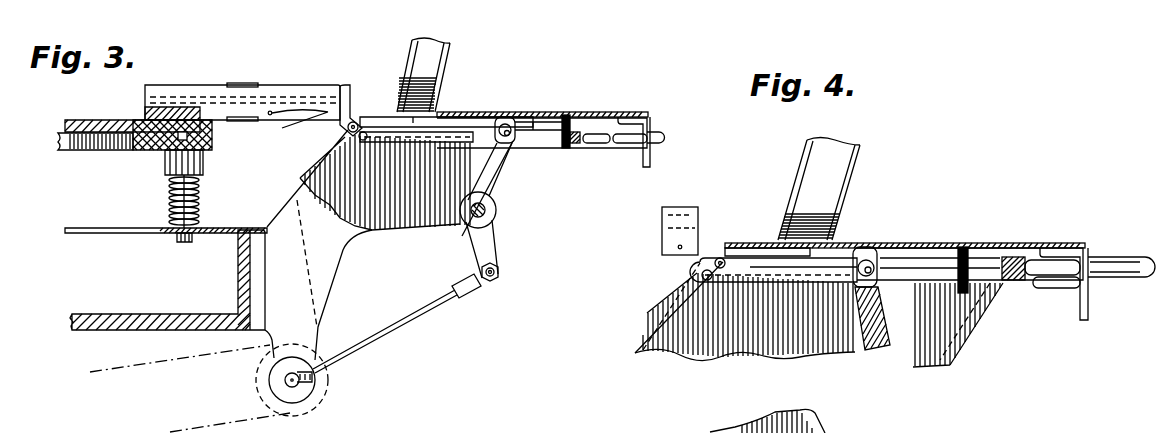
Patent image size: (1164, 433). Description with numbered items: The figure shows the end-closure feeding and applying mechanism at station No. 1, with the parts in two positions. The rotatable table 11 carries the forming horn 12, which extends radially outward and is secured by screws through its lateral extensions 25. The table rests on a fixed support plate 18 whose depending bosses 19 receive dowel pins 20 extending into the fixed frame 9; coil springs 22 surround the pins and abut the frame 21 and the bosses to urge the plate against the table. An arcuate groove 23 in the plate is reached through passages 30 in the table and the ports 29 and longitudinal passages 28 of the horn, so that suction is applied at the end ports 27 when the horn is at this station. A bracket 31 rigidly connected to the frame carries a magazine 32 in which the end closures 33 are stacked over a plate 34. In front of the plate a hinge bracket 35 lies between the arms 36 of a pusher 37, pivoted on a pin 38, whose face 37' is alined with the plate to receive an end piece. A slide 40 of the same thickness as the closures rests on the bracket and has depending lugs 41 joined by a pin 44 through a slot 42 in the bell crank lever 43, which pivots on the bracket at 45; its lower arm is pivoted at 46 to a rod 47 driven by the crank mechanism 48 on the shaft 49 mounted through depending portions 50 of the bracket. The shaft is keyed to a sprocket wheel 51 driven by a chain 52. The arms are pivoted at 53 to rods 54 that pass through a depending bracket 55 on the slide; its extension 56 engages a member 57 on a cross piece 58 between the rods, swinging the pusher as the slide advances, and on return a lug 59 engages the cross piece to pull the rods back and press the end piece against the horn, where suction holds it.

In FIG. 3, the station No. 1 is at (293, 52).
In FIG. 3, the fixed frame 9 is at (238, 286).
In FIG. 3, the table 11 is at (70, 120).
In FIG. 3, the forming horn 12 is at (200, 85).
In FIG. 4, the forming horn 12 is at (690, 207).
In FIG. 3, the support plate 18 is at (212, 138).
In FIG. 3, the depending bosses 19 is at (203, 162).
In FIG. 3, the dowel pins 20 is at (178, 240).
In FIG. 3, the frame 21 is at (222, 228).
In FIG. 3, the coil springs 22 is at (200, 195).
In FIG. 3, the arcuate groove 23 is at (170, 152).
In FIG. 3, the lateral extensions 25 is at (163, 108).
In FIG. 3, the ports 27 is at (291, 126).
In FIG. 4, the ports 27 is at (678, 247).
In FIG. 3, the longitudinal passages 28 is at (277, 97).
In FIG. 4, the longitudinal passages 28 is at (668, 218).
In FIG. 3, the ports 29 is at (145, 108).
In FIG. 3, the passages 30 is at (152, 127).
In FIG. 3, the bracket 31 is at (325, 282).
In FIG. 4, the bracket 31 is at (968, 333).
In FIG. 3, the magazine 32 is at (446, 58).
In FIG. 4, the magazine 32 is at (848, 198).
In FIG. 3, the end closures 33 is at (431, 105).
In FIG. 4, the end closures 33 is at (766, 242).
In FIG. 3, the plate 34 is at (441, 113).
In FIG. 4, the plate 34 is at (845, 268).
In FIG. 3, the hinge bracket 35 is at (388, 117).
In FIG. 4, the hinge bracket 35 is at (792, 256).
In FIG. 3, the arms 36 is at (362, 120).
In FIG. 4, the arms 36 is at (735, 250).
In FIG. 3, the pusher 37 is at (353, 96).
In FIG. 4, the pusher 37 is at (778, 297).
In FIG. 3, the face 37' is at (326, 79).
In FIG. 4, the face 37' is at (753, 228).
In FIG. 3, the pin 38 is at (348, 128).
In FIG. 4, the pin 38 is at (715, 262).
In FIG. 3, the slide 40 is at (552, 112).
In FIG. 4, the slide 40 is at (862, 245).
In FIG. 3, the depending lugs 41 is at (510, 137).
In FIG. 4, the depending lugs 41 is at (892, 258).
In FIG. 3, the slot 42 is at (507, 124).
In FIG. 4, the slot 42 is at (866, 288).
In FIG. 3, the bell crank lever 43 is at (494, 192).
In FIG. 4, the bell crank lever 43 is at (884, 351).
In FIG. 3, the pin 44 is at (500, 140).
In FIG. 4, the pin 44 is at (883, 268).
In FIG. 3, the pivot 45 is at (472, 217).
In FIG. 3, the pivotal connection 46 is at (501, 271).
In FIG. 3, the rod 47 is at (400, 318).
In FIG. 3, the crank mechanism 48 is at (325, 392).
In FIG. 3, the shaft 49 is at (291, 388).
In FIG. 3, the depending portions 50 is at (307, 343).
In FIG. 3, the sprocket wheel 51 is at (260, 382).
In FIG. 3, the chain 52 is at (178, 372).
In FIG. 3, the pivotal connection 53 is at (359, 137).
In FIG. 4, the pivotal connection 53 is at (702, 276).
In FIG. 3, the rods 54 is at (390, 141).
In FIG. 4, the rods 54 is at (770, 285).
In FIG. 3, the depending bracket 55 is at (649, 123).
In FIG. 4, the depending bracket 55 is at (1086, 250).
In FIG. 3, the extension 56 is at (632, 143).
In FIG. 4, the extension 56 is at (1055, 289).
In FIG. 3, the member 57 is at (600, 143).
In FIG. 4, the member 57 is at (1055, 262).
In FIG. 3, the cross piece 58 is at (578, 134).
In FIG. 4, the cross piece 58 is at (1015, 258).
In FIG. 3, the lug 59 is at (565, 149).
In FIG. 4, the lug 59 is at (968, 290).